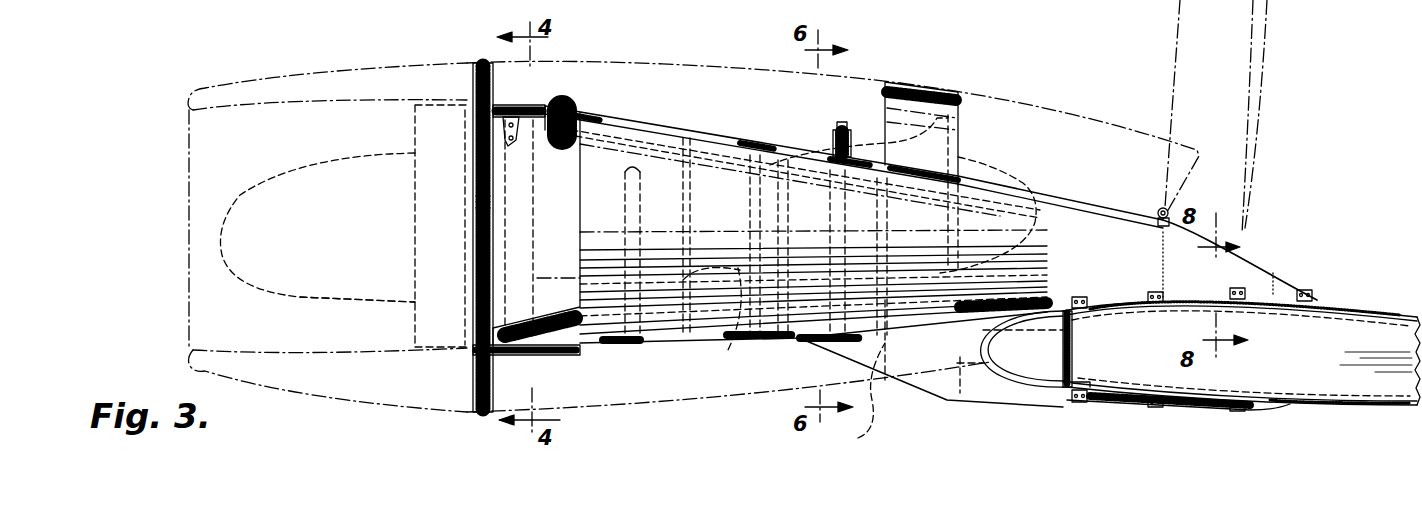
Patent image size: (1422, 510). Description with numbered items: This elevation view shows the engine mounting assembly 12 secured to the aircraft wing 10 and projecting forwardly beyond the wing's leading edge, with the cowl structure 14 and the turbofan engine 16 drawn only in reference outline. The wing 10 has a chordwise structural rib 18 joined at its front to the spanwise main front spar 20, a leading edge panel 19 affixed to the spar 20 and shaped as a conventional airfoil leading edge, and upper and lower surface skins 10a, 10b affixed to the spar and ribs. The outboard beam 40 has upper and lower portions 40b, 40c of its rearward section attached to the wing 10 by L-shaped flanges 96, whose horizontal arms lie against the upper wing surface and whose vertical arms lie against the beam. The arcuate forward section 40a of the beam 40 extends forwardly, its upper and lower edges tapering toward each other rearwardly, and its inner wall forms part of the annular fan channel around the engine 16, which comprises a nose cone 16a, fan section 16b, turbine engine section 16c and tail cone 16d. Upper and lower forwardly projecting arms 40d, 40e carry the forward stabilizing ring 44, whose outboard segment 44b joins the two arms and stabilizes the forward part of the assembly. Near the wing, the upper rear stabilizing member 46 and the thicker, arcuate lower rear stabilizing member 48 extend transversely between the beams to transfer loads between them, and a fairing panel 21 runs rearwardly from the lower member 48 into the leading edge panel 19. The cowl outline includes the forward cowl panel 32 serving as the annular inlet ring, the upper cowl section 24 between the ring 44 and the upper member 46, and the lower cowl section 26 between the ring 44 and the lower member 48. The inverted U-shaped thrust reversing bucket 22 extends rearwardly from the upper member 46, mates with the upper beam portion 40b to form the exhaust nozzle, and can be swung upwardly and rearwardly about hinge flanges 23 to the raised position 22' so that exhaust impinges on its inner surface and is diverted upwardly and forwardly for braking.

The aircraft wing 10 is at (1334, 302).
The upper airfoil surface skin 10a is at (1365, 313).
The lower surface skin 10b is at (1313, 406).
The engine mounting assembly 12 is at (582, 360).
The nacelle cowling 14 is at (364, 68).
The turbofan engine 16 is at (317, 168).
The nose cone 16a is at (315, 284).
The fan section 16b is at (433, 144).
The turbine engine section 16c is at (730, 340).
The tail cone 16d is at (997, 167).
The structural rib 18 is at (1337, 327).
The leading edge panel 19 is at (992, 370).
The main front spar 20 is at (1064, 357).
The fairing panel 21 is at (940, 405).
The thrust reversing bucket 22 is at (1049, 147).
The flap in open position 22' is at (1252, 116).
The flanges 23 is at (1158, 211).
The upper central cowl panel 24 is at (683, 78).
The lower central cowl panel 26 is at (668, 385).
The forward cowl panel 32 is at (323, 394).
The outboard beam 40 is at (592, 286).
The forward section of outboard beam 40a is at (627, 147).
The upper portion of rearward section 40b is at (1243, 262).
The lower portion of rearward section 40c is at (1160, 407).
The upper forwardly projecting arm 40d is at (522, 113).
The lower forwardly projecting arm 40e is at (515, 345).
The forward stabilizing ring 44 is at (483, 62).
The outboard segment 44b is at (480, 200).
The upper rear stabilizing member 46 is at (925, 110).
The lower rear stabilizing member 48 is at (857, 398).
The L-shaped flanges 96 is at (1083, 297).